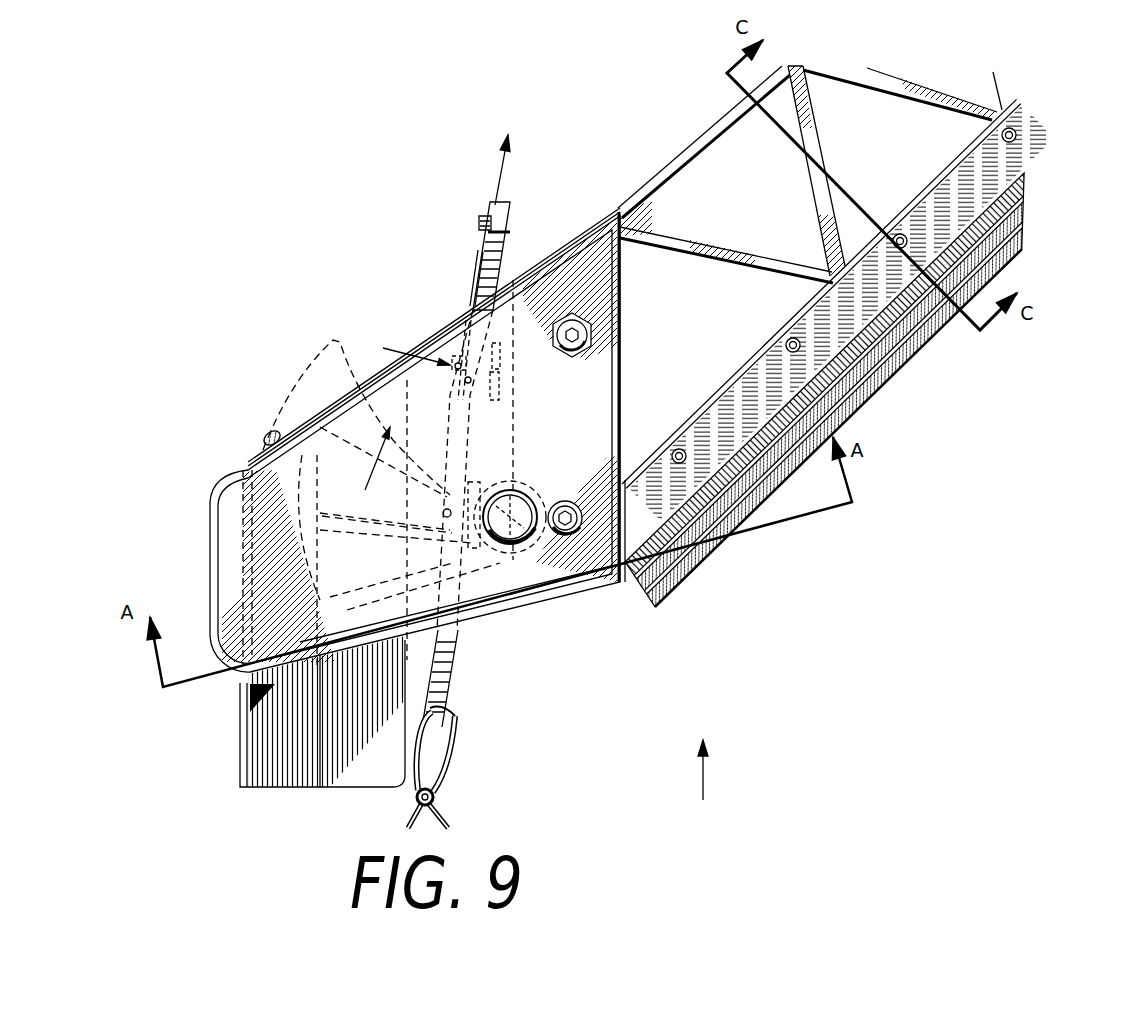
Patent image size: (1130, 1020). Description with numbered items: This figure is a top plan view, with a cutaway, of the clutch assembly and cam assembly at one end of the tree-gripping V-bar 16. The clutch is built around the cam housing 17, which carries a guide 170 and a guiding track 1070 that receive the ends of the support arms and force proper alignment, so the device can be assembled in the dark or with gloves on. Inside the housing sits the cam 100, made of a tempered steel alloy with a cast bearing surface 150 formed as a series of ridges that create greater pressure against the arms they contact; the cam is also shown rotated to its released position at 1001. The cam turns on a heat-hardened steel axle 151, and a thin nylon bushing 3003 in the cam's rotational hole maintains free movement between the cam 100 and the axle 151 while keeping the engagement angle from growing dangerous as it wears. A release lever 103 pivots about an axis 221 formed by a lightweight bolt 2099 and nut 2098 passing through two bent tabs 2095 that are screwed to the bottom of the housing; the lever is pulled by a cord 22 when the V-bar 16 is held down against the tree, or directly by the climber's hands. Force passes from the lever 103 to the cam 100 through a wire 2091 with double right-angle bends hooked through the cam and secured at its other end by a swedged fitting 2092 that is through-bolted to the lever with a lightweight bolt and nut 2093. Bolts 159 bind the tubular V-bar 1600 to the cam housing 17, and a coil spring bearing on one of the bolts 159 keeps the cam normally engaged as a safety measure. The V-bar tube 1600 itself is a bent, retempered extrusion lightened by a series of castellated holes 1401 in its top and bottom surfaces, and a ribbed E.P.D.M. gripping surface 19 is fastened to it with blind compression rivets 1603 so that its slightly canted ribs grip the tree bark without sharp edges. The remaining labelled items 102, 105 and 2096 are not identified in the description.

The V-bar 16 is at (700, 787).
The cam housing 17 is at (227, 527).
The ribbed gripping surface 19 is at (865, 392).
The cord 22 is at (450, 762).
The cam 100 is at (270, 438).
The cam in released position 1001 is at (330, 378).
The plate 102 is at (470, 357).
The release lever 103 is at (507, 257).
The knot 105 is at (444, 802).
The cast bearing surface 150 is at (293, 598).
The axle 151 is at (508, 550).
The bolt 159 is at (593, 337).
The guide 170 is at (247, 737).
The axis 221 is at (397, 346).
The guiding track 1070 is at (240, 777).
The castellated holes 1401 is at (700, 202).
The V-bar tube 1600 is at (692, 158).
The blind compression rivets 1603 is at (805, 352).
The wire 2091 is at (477, 298).
The swedged fitting 2092 is at (477, 258).
The lightweight bolt and nut 2093 is at (480, 220).
The bent tabs 2095 is at (497, 360).
The pin 2096 is at (467, 382).
The nut 2098 is at (460, 363).
The lightweight bolt 2099 is at (500, 377).
The nylon bushing 3003 is at (520, 510).